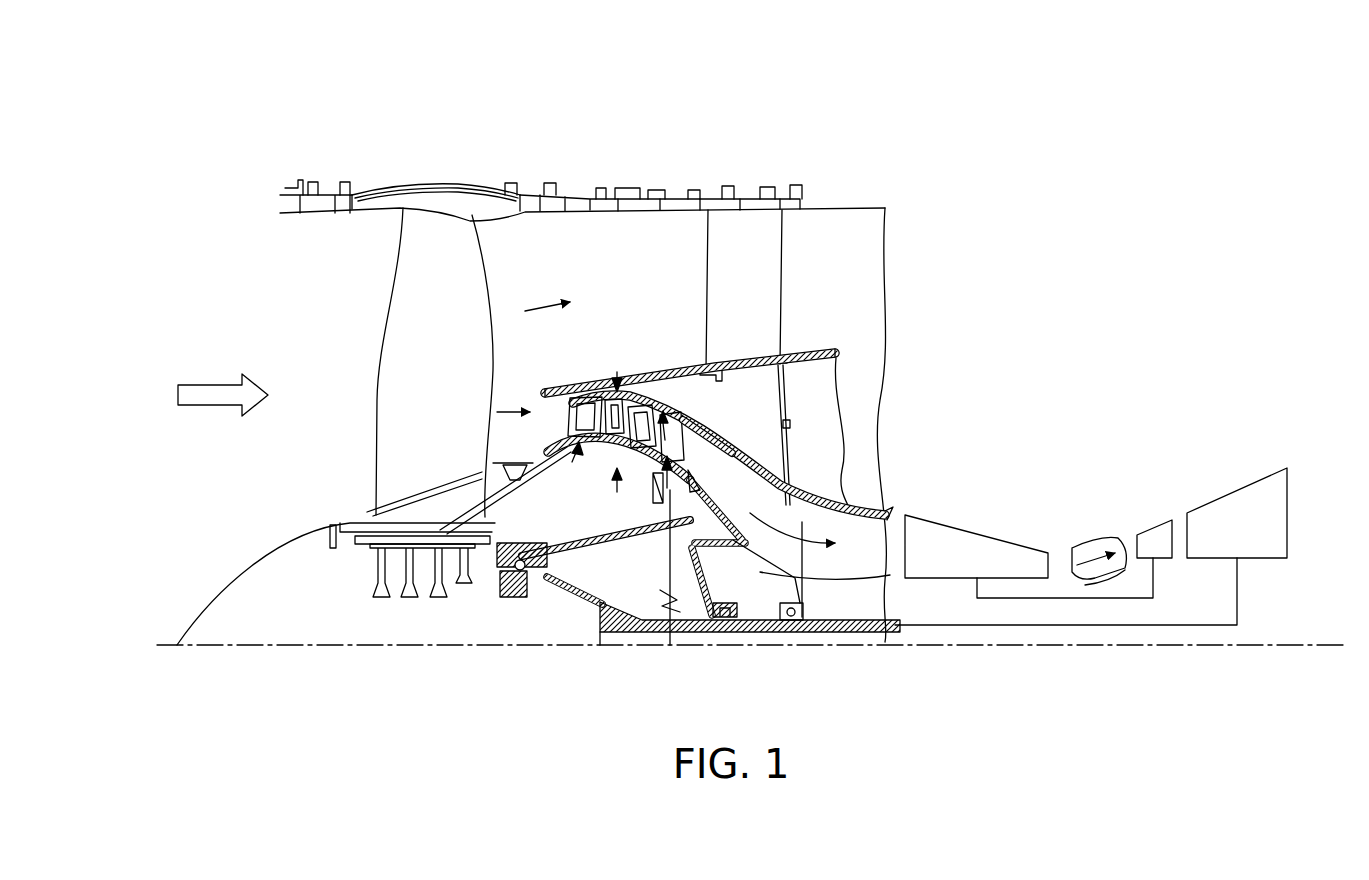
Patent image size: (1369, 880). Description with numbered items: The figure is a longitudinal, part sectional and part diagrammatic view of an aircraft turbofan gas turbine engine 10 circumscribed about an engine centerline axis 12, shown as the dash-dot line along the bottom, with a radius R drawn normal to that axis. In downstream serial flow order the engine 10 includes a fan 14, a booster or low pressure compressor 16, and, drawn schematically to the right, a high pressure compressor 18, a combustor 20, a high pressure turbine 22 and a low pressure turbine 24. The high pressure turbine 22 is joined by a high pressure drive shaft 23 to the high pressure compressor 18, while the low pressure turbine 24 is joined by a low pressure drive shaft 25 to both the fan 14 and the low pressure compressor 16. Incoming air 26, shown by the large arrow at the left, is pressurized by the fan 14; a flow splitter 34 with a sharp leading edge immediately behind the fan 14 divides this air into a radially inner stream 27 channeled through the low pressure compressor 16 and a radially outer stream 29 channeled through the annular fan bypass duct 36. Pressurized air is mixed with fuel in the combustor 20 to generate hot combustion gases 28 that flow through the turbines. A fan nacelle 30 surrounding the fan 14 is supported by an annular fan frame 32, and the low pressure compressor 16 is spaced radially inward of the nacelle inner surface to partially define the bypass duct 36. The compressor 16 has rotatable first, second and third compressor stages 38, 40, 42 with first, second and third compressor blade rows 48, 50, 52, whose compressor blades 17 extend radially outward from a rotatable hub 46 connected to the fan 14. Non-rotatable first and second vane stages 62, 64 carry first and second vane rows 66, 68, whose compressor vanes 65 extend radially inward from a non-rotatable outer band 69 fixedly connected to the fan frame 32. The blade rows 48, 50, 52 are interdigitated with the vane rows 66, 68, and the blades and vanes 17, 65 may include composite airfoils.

The aircraft turbofan gas turbine engine 10 is at (1110, 160).
The engine centerline axis 12 is at (1210, 648).
The fan 14 is at (411, 357).
The low pressure compressor 16 is at (628, 485).
The compressor blades 17 is at (580, 395).
The high pressure compressor 18 is at (958, 561).
The combustor 20 is at (1072, 548).
The high pressure turbine 22 is at (1158, 522).
The high pressure drive shaft 23 is at (1107, 600).
The low pressure turbine 24 is at (1223, 537).
The low pressure drive shaft 25 is at (1003, 628).
The air 26 is at (220, 412).
The radially inner stream 27 is at (487, 425).
The hot combustion gases 28 is at (1113, 537).
The radially outer stream 29 is at (538, 302).
The fan nacelle 30 is at (455, 196).
The fan frame 32 is at (783, 247).
The flow splitter 34 is at (600, 375).
The fan bypass duct 36 is at (646, 287).
The first compressor stage 38 is at (575, 458).
The second compressor stage 40 is at (616, 493).
The third compressor stage 42 is at (688, 470).
The rotatable hub 46 is at (615, 440).
The first compressor blade row 48 is at (583, 420).
The second compressor blade row 50 is at (640, 390).
The third compressor blade row 52 is at (708, 436).
The first vane stage 62 is at (590, 372).
The second vane stage 64 is at (672, 418).
The compressor vanes 65 is at (640, 416).
The first vane row 66 is at (600, 455).
The second vane row 68 is at (660, 455).
The outer band 69 is at (618, 372).
The radius R is at (677, 593).